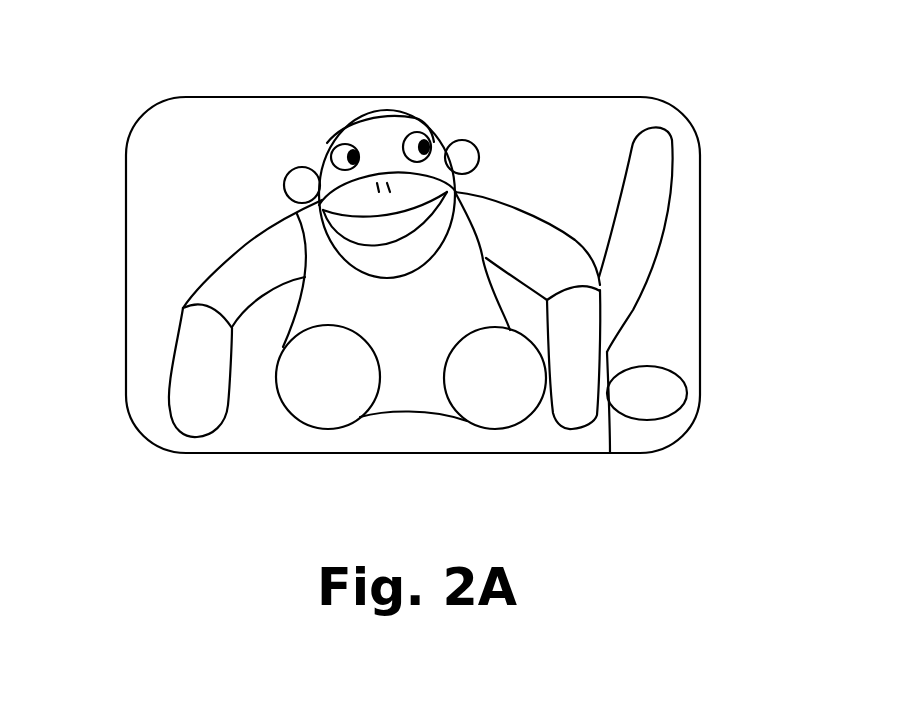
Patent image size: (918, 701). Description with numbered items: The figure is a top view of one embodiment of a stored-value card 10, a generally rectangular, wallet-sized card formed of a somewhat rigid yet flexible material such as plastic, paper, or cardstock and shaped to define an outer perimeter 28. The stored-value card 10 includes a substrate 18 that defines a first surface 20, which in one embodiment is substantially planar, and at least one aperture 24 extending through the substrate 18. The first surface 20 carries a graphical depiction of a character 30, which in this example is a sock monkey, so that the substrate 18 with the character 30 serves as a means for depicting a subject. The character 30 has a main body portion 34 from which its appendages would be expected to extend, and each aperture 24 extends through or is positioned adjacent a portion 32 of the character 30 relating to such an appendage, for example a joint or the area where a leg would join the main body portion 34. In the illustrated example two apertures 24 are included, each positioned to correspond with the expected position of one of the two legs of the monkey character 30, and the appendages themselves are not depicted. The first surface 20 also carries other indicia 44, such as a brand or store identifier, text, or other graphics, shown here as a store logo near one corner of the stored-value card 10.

The stored-value card 10 is at (420, 228).
The substrate 18 is at (143, 302).
The first surface 20 is at (378, 275).
The aperture 24 is at (317, 388).
The outer perimeter 28 is at (420, 275).
The character 30 is at (414, 115).
The portion of character 32 is at (401, 386).
The main body portion 34 is at (452, 280).
The other indicia 44 is at (611, 413).